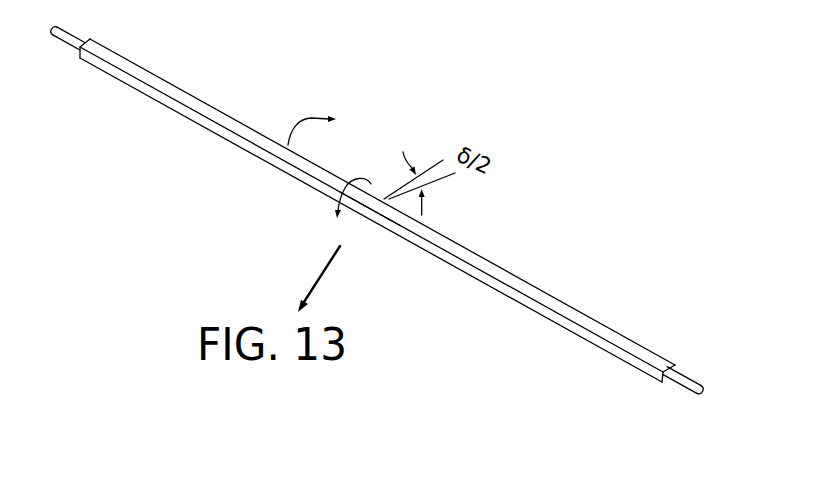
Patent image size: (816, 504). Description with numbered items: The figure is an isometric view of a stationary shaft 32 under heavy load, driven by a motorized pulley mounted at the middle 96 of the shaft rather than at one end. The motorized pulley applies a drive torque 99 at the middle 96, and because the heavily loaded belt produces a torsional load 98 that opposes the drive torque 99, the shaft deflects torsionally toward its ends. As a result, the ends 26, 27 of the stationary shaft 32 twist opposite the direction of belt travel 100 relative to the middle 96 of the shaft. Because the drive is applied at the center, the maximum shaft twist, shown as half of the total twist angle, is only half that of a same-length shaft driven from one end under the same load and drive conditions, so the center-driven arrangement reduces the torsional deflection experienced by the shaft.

The shaft end 26 is at (80, 59).
The shaft end 27 is at (662, 382).
The stationary shaft 32 is at (517, 279).
The middle of the stationary shaft 96 is at (369, 185).
The torsional load 98 is at (304, 118).
The drive torque 99 is at (351, 178).
The direction of belt travel 100 is at (324, 271).